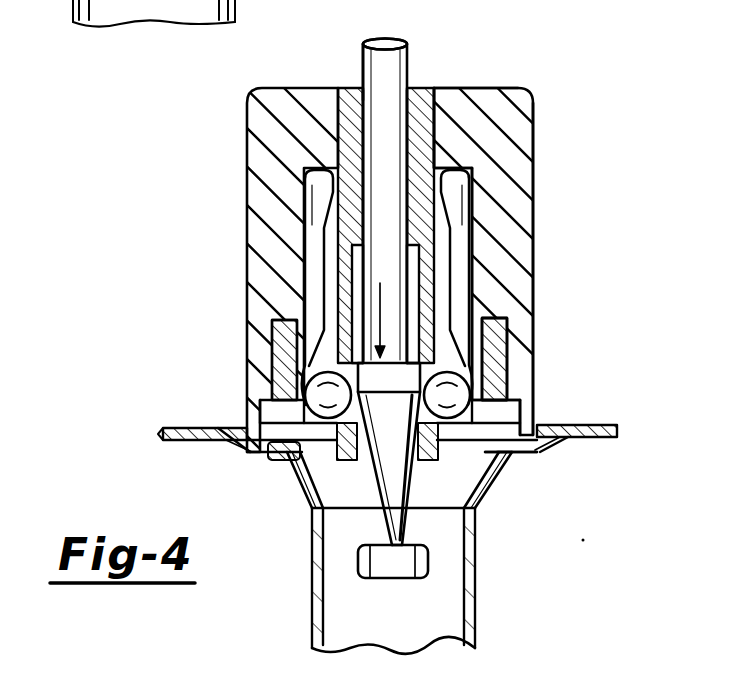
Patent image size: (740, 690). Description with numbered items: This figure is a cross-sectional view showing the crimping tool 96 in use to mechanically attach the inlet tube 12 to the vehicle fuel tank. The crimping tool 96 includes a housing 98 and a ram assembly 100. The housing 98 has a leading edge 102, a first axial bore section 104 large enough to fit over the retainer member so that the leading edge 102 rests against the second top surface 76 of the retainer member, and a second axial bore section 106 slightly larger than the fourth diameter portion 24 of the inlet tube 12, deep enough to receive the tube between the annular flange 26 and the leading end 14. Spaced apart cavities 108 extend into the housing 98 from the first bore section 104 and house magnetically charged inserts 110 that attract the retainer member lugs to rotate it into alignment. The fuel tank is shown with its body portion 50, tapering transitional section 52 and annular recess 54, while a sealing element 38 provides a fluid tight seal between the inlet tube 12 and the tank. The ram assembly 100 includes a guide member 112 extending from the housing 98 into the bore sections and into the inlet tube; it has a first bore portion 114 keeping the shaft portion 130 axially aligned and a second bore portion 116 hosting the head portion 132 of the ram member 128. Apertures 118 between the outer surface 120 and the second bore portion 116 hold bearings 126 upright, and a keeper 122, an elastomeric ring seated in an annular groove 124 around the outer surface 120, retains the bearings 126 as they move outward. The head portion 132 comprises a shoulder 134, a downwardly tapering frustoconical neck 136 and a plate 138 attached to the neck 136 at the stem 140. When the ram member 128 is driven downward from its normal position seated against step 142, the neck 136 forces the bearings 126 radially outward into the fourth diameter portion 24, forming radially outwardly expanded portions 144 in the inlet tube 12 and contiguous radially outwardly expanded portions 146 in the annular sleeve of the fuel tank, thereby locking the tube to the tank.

The inlet tube 12 is at (492, 300).
The leading end 14 is at (470, 168).
The fourth diameter portion 24 is at (522, 388).
The annular flange 26 is at (515, 458).
The sealing element 38 is at (508, 470).
The body portion 50 is at (594, 428).
The tapering transitional section 52 is at (557, 445).
The annular recess 54 is at (540, 455).
The second top surface 76 is at (248, 452).
The crimping tool 96 is at (324, 47).
The housing 98 is at (275, 132).
The ram assembly 100 is at (410, 55).
The leading edge 102 is at (226, 447).
The first axial bore section 104 is at (537, 410).
The second axial bore section 106 is at (510, 318).
The cavities 108 is at (497, 345).
The magnetically charged inserts 110 is at (503, 352).
The guide member 112 is at (410, 115).
The first bore portion 114 is at (350, 86).
The second bore portion 116 is at (500, 331).
The apertures 118 is at (405, 456).
The outer surface 120 is at (330, 210).
The keeper 122 is at (282, 462).
The annular groove 124 is at (306, 468).
The bearings 126 is at (493, 470).
The ram member 128 is at (362, 65).
The shaft portion 130 is at (433, 127).
The head portion 132 is at (389, 393).
The shoulder 134 is at (317, 362).
The neck 136 is at (343, 508).
The plate 138 is at (433, 566).
The stem 140 is at (392, 537).
The step 142 is at (467, 302).
The radially outwardly expanded portions 144 is at (306, 372).
The radially outwardly expanded portions 146 is at (250, 412).